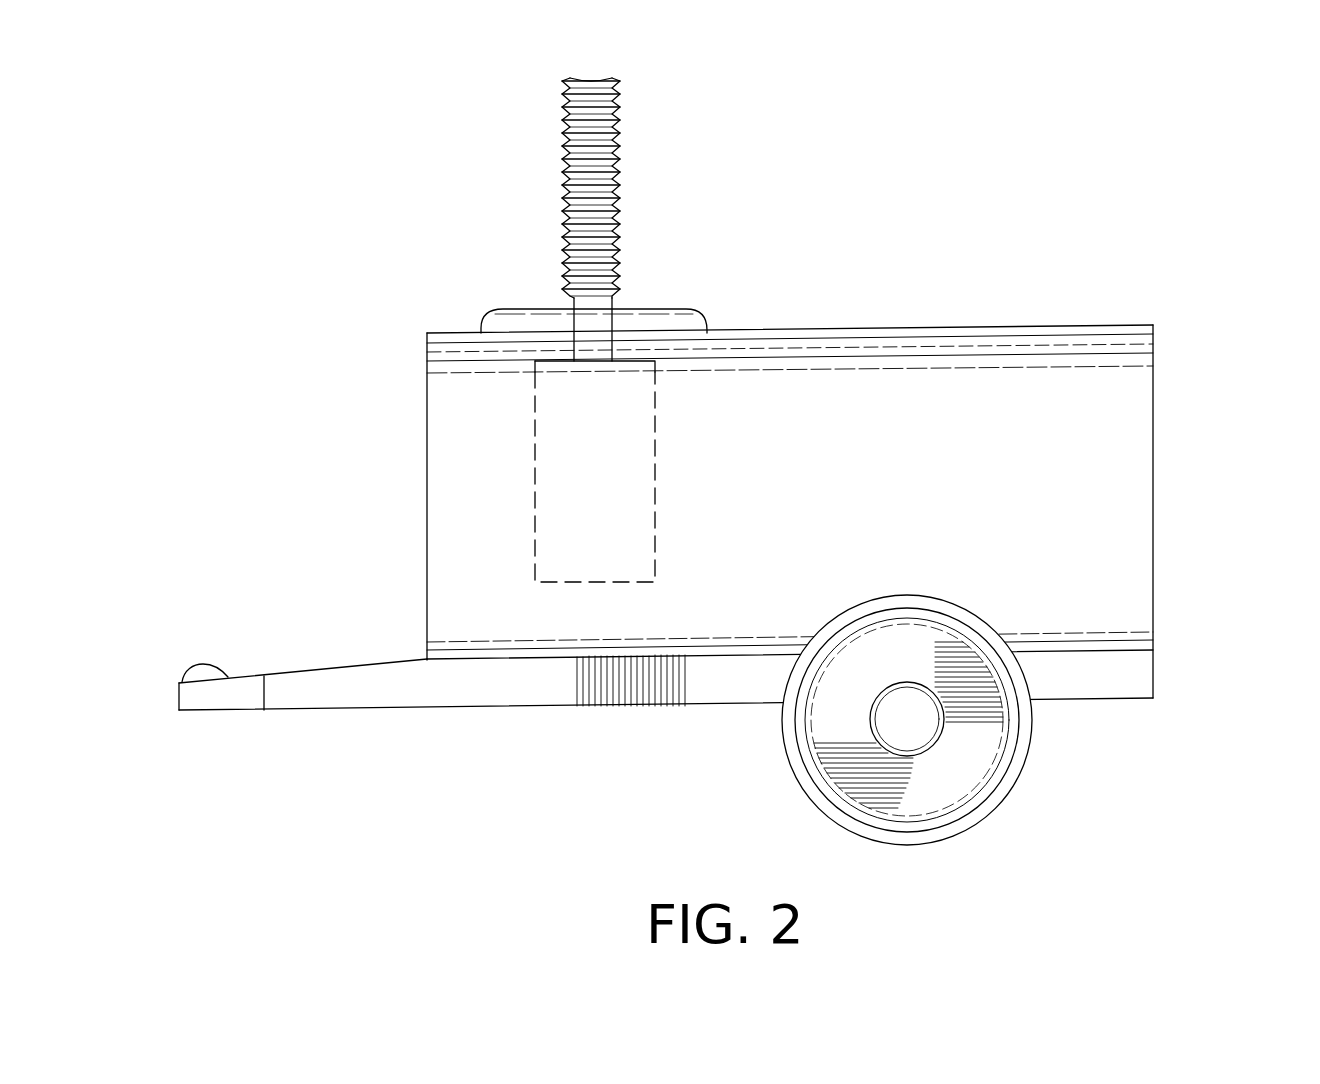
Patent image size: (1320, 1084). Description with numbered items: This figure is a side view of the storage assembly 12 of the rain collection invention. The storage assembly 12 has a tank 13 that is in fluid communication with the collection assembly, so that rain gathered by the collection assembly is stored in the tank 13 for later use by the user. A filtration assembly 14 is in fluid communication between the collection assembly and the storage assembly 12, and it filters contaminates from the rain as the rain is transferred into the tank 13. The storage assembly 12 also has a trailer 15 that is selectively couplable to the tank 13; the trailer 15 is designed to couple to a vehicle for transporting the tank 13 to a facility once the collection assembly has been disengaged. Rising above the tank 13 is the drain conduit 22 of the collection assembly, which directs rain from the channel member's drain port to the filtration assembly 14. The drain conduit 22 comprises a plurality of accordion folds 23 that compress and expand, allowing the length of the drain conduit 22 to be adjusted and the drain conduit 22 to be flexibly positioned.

The storage assembly 12 is at (1018, 238).
The tank 13 is at (1100, 467).
The filtration assembly 14 is at (535, 472).
The trailer 15 is at (1123, 680).
The drain conduit 22 is at (610, 213).
The accordion folds 23 is at (616, 119).